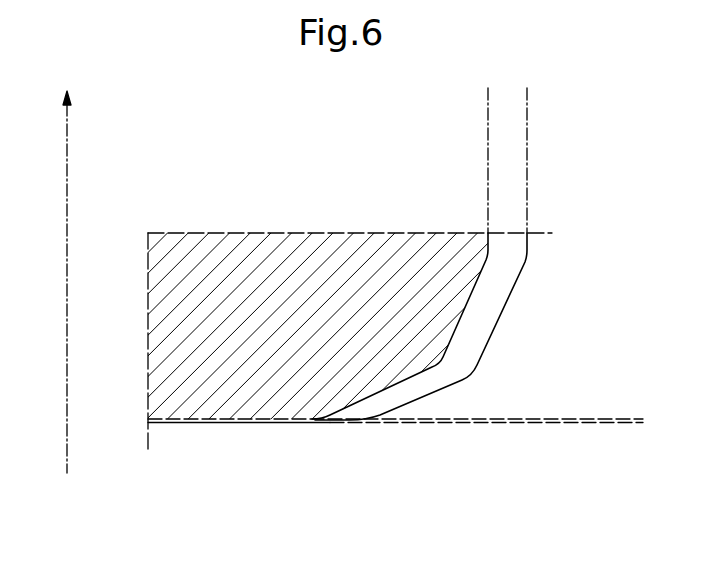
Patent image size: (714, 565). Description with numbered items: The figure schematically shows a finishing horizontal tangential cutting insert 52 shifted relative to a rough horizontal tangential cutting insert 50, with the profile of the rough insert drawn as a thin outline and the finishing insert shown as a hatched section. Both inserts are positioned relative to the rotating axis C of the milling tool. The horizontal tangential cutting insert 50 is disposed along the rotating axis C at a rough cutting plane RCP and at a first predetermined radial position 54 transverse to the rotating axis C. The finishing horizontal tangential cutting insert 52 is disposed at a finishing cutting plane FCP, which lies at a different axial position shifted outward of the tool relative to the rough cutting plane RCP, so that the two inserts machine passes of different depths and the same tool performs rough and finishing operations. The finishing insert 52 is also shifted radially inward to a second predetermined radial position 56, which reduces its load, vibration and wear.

The horizontal tangential cutting insert 50 is at (487, 293).
The finishing horizontal tangential cutting insert 52 is at (262, 383).
The first predetermined radial position 54 is at (528, 124).
The second predetermined radial position 56 is at (487, 124).
The rotating axis C is at (67, 163).
The rough cutting plane RCP is at (605, 419).
The finishing cutting plane FCP is at (605, 423).